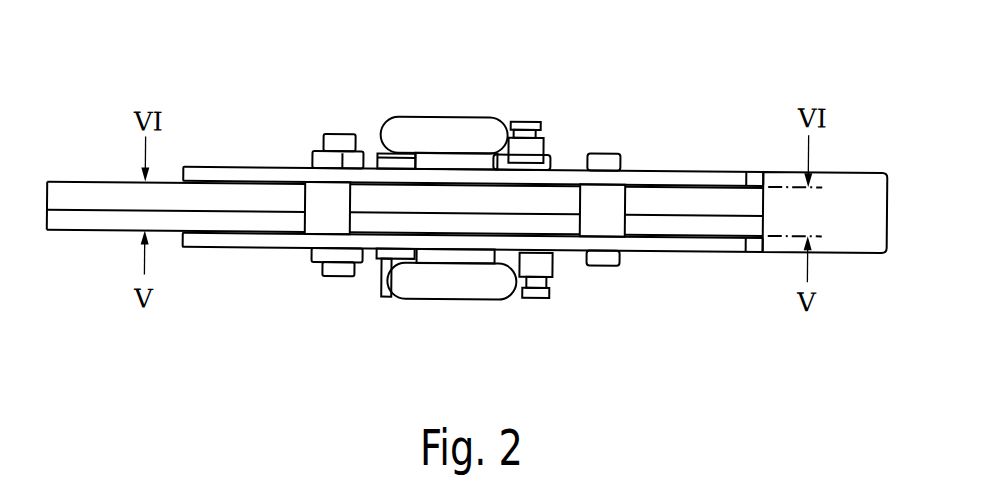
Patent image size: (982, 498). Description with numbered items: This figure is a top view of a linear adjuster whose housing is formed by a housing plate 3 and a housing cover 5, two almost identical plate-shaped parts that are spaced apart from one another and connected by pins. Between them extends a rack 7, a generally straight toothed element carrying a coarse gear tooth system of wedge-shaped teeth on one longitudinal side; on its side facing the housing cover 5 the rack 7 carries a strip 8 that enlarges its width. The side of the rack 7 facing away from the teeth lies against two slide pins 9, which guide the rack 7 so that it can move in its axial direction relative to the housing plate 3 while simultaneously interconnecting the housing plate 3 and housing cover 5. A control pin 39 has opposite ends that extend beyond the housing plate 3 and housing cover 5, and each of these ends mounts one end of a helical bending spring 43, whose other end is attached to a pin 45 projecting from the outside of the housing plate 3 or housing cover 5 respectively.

The housing plate 3 is at (672, 174).
The housing cover 5 is at (677, 236).
The rack 7 is at (242, 197).
The strip 8 is at (237, 222).
The slide pins 9 is at (319, 213).
The control pin 39 is at (540, 258).
The helical bending springs 43 is at (467, 131).
The pins 45 is at (387, 256).